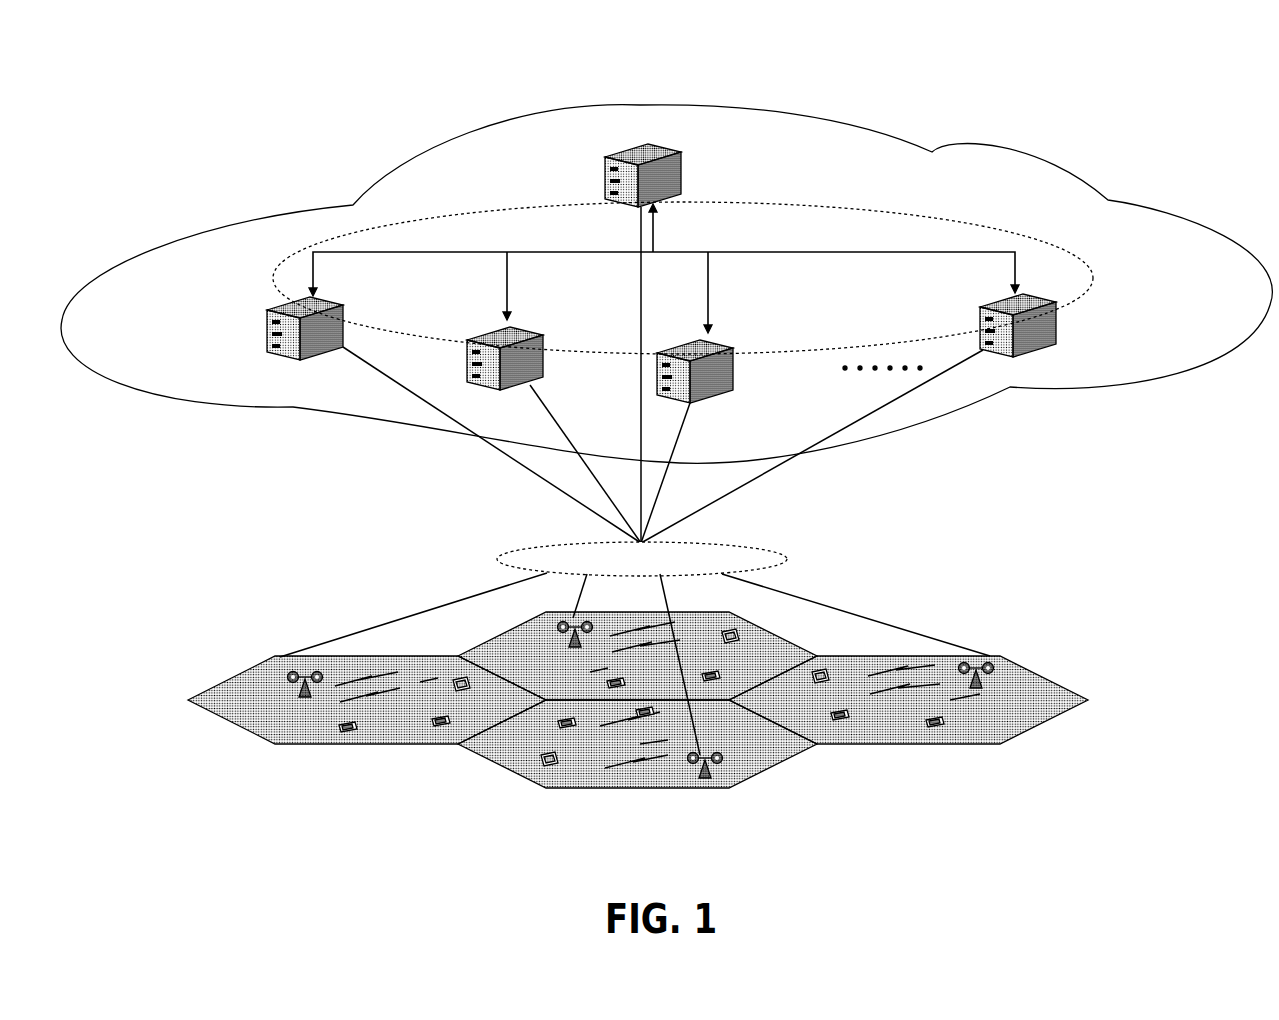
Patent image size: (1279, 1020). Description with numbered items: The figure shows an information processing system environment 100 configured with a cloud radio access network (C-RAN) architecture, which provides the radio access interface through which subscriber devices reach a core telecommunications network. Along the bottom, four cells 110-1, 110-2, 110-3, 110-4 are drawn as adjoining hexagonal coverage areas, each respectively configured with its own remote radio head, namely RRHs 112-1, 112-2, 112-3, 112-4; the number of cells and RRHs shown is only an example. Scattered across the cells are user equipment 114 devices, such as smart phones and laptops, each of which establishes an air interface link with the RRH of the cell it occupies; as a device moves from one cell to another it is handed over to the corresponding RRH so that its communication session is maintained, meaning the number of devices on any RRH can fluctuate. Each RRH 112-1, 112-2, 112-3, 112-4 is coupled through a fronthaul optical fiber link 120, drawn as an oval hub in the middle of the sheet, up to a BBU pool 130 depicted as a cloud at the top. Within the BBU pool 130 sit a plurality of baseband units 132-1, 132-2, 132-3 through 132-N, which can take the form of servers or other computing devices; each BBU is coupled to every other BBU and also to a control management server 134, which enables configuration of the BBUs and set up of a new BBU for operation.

The information processing system environment 100 is at (1185, 78).
The BBU pool 130 is at (424, 140).
The control management server 134 is at (729, 151).
The BBU 132-1 is at (230, 343).
The BBU 132-2 is at (473, 320).
The BBU 132-3 is at (794, 320).
The BBU 132-N is at (1168, 320).
The fronthaul link 120 is at (488, 560).
The cell 110-1 is at (230, 669).
The cell 110-2 is at (498, 635).
The cell 110-3 is at (1096, 669).
The cell 110-4 is at (515, 799).
The RRH 112-1 is at (300, 725).
The RRH 112-2 is at (570, 681).
The RRH 112-3 is at (1048, 718).
The RRH 112-4 is at (786, 762).
The user equipment 114 is at (516, 704).